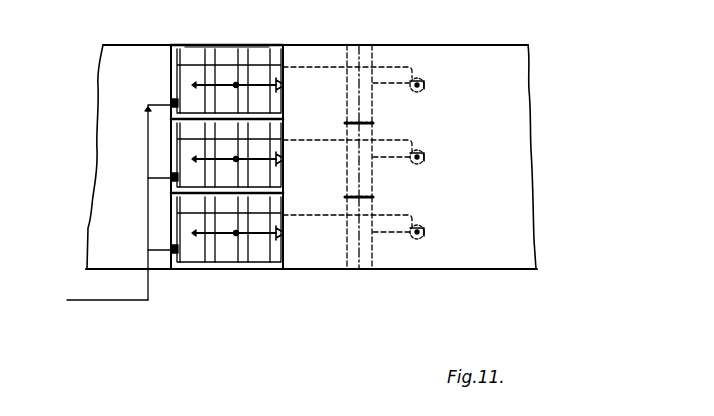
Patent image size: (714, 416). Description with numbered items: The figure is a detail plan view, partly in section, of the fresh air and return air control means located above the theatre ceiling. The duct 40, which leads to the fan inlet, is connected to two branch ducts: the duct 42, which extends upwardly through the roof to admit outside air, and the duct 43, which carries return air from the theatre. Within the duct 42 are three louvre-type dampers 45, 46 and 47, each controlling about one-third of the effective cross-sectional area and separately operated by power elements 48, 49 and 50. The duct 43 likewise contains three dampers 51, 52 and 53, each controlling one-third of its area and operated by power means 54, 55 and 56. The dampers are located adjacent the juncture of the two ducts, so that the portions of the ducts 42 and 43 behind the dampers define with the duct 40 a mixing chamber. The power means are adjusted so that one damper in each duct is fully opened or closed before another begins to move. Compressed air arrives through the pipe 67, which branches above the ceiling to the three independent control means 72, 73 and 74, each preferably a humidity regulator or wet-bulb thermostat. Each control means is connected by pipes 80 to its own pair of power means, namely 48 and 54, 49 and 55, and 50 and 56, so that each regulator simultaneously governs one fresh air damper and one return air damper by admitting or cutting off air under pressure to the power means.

The duct 40 is at (100, 243).
The branch duct 42 is at (220, 45).
The branch duct 43 is at (508, 102).
The damper means 45 is at (186, 257).
The damper means 46 is at (192, 133).
The damper means 47 is at (193, 57).
The power element 48 is at (267, 264).
The power element 49 is at (284, 164).
The power element 50 is at (284, 88).
The damper 51 is at (393, 264).
The damper 52 is at (362, 173).
The damper 53 is at (372, 48).
The power means 54 is at (425, 238).
The power means 55 is at (421, 153).
The power means 56 is at (421, 80).
The pipe 67 is at (96, 304).
The control means 72 is at (172, 246).
The control means 73 is at (172, 176).
The control means 74 is at (172, 102).
The pipes 80 is at (309, 65).